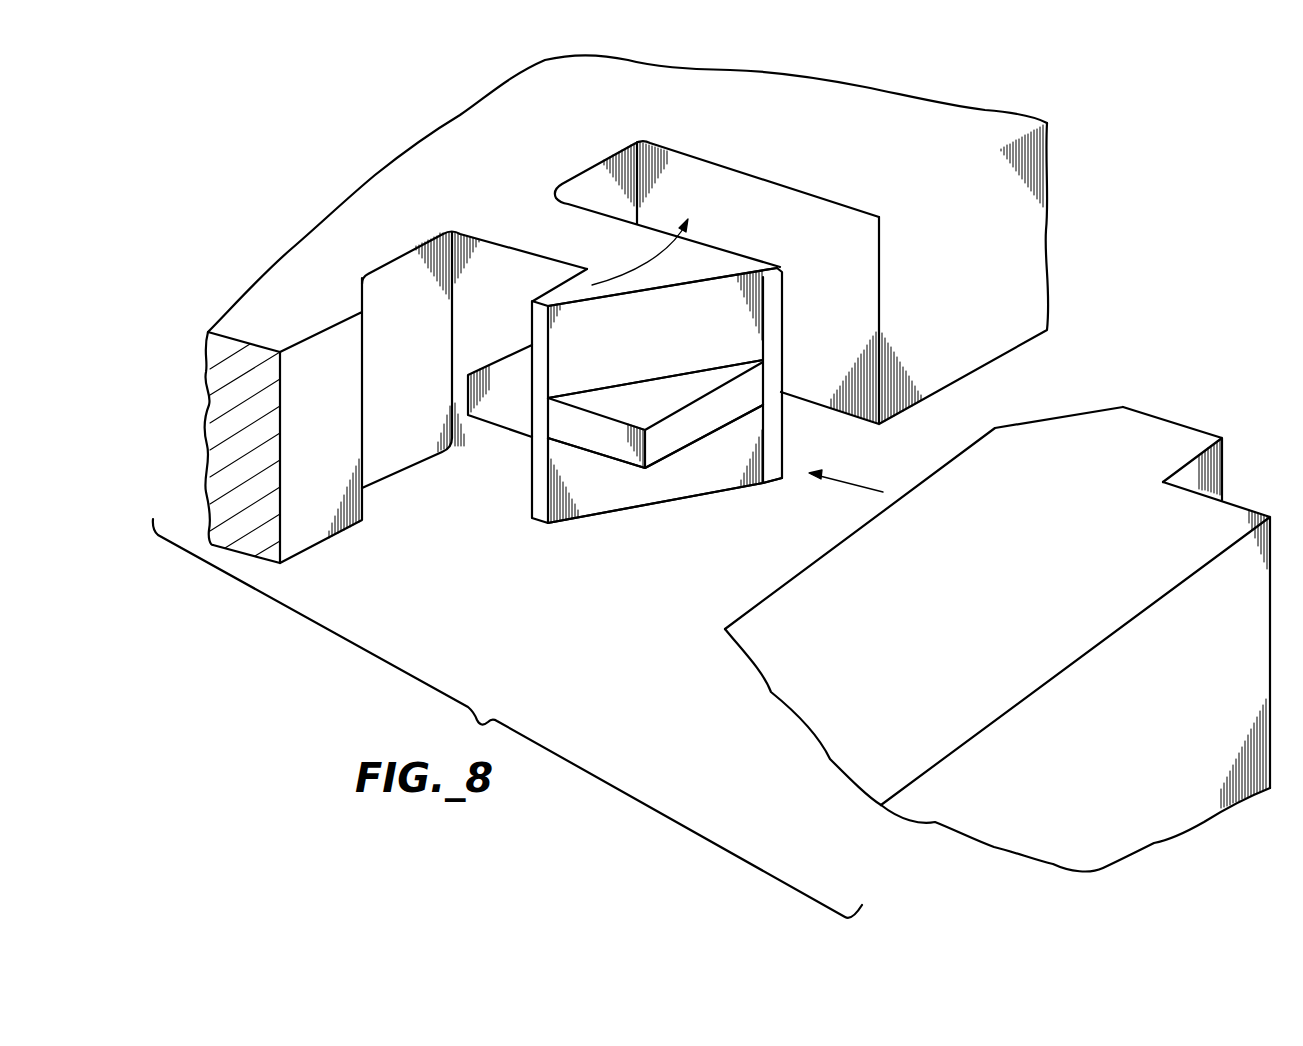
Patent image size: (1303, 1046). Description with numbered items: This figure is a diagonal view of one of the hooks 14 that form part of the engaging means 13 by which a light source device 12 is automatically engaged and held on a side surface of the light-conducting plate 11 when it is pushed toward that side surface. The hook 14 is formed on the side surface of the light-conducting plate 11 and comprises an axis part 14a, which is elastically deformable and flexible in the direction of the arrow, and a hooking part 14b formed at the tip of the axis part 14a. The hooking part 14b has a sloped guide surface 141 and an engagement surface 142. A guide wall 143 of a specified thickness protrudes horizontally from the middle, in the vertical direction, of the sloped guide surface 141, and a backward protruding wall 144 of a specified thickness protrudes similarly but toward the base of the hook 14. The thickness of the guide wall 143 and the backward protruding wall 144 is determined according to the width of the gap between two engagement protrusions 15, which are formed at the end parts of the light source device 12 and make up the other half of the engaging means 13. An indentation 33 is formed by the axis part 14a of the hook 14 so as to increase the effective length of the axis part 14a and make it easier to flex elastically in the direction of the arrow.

The light-conducting plate 11 is at (477, 171).
The light source device 12 is at (1037, 437).
The engaging means 13 is at (1058, 249).
The hook 14 is at (618, 531).
The axis part 14a is at (592, 230).
The hooking part 14b is at (708, 253).
The engagement protrusion 15 is at (1162, 430).
The indentation 33 is at (583, 185).
The sloped guide surface 141 is at (713, 483).
The engagement surface 142 is at (540, 355).
The guide wall 143 is at (672, 441).
The backward protruding wall 144 is at (497, 413).